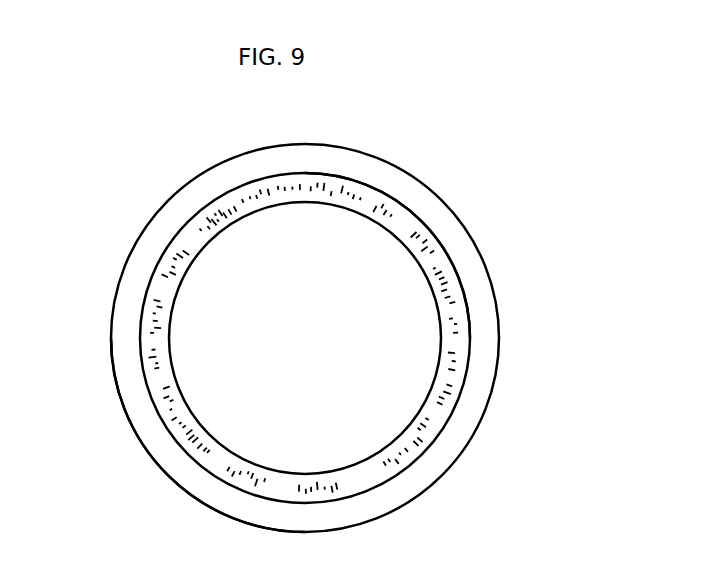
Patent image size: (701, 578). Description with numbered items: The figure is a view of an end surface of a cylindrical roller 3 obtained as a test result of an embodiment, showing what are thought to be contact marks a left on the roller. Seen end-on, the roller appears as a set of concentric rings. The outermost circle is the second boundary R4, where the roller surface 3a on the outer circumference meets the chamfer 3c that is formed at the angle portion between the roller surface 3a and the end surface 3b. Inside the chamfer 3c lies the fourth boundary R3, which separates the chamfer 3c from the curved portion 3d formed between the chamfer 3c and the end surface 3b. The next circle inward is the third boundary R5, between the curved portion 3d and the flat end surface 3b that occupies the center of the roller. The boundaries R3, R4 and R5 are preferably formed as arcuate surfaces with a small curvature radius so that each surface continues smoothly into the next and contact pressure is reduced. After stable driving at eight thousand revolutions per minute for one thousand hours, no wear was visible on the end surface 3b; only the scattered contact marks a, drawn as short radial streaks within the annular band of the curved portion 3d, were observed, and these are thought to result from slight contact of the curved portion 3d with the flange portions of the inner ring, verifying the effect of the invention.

The cylindrical roller 3 is at (105, 290).
The roller surface 3a is at (170, 475).
The end surface 3b is at (375, 378).
The chamfer 3c is at (400, 490).
The curved portion 3d is at (458, 323).
The contact mark a is at (210, 209).
The fourth boundary R3 is at (412, 210).
The second boundary R4 is at (120, 400).
The third boundary R5 is at (332, 202).